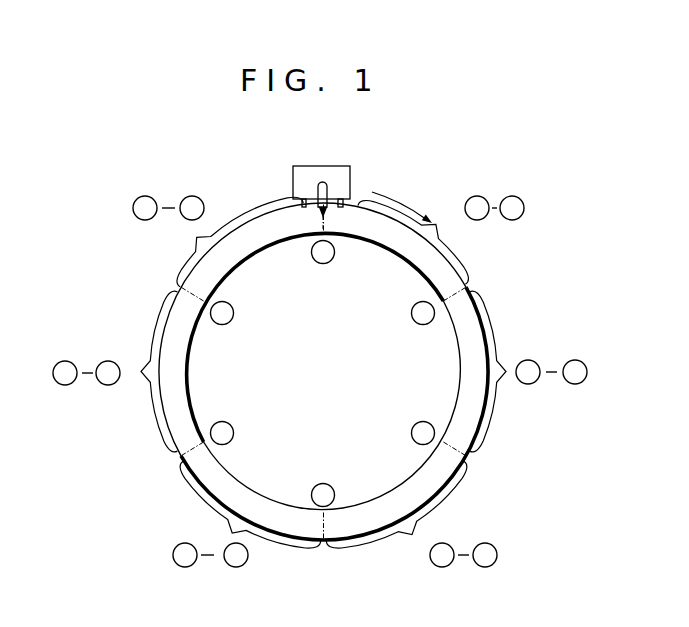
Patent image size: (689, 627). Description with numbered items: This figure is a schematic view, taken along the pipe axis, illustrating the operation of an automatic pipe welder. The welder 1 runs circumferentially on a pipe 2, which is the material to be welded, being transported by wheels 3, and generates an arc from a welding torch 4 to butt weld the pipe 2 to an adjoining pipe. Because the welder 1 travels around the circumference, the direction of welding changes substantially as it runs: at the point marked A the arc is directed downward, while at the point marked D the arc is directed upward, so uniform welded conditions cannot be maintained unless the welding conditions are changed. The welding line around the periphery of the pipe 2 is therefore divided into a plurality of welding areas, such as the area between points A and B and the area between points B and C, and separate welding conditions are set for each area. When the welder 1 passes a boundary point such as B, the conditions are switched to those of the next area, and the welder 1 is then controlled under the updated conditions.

The welder 1 is at (313, 168).
The pipe 2 is at (190, 281).
The wheels 3 is at (293, 200).
The welding torch 4 is at (327, 185).